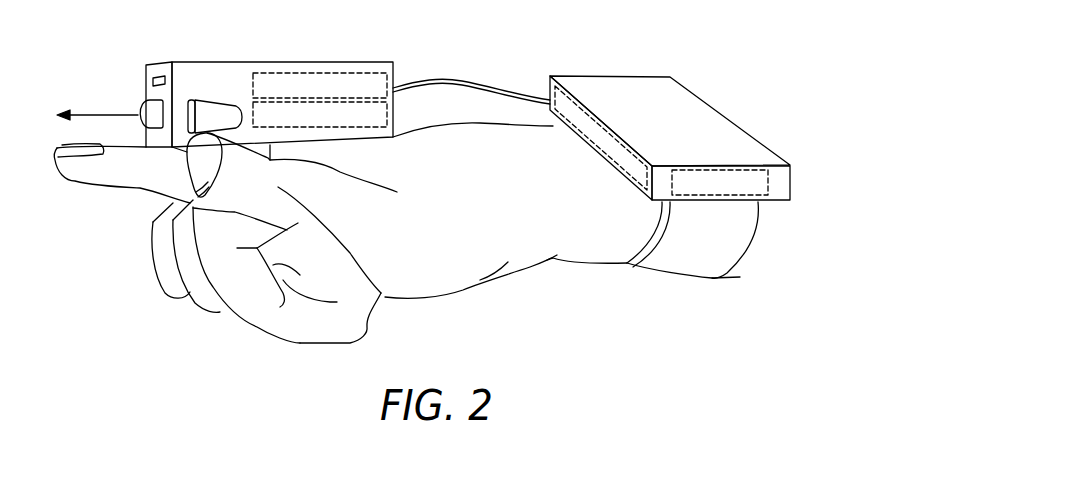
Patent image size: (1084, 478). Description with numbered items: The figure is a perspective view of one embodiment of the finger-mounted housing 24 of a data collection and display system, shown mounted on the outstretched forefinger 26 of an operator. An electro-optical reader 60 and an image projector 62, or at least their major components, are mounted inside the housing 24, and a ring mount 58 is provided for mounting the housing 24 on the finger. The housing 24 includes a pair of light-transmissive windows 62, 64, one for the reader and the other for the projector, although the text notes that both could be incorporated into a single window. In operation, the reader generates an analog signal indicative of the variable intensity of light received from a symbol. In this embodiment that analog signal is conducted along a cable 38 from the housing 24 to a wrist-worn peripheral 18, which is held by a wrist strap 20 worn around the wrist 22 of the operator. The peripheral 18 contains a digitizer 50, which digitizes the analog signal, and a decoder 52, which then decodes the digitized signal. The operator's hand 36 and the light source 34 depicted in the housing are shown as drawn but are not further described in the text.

The wrist-worn peripheral 18 is at (684, 124).
The wrist strap 20 is at (710, 223).
The wrist 22 is at (600, 243).
The finger-mounted housing 24 is at (205, 72).
The forefinger 26 is at (110, 178).
The light source 34 is at (226, 107).
The hand 36 is at (381, 293).
The cable 38 is at (487, 82).
The digitizer 50 is at (613, 167).
The decoder 52 is at (772, 174).
The ring mount 58 is at (158, 220).
The electro-optical reader 60 is at (358, 78).
The image projector 62 is at (153, 80).
The light-transmissive window 64 is at (137, 112).